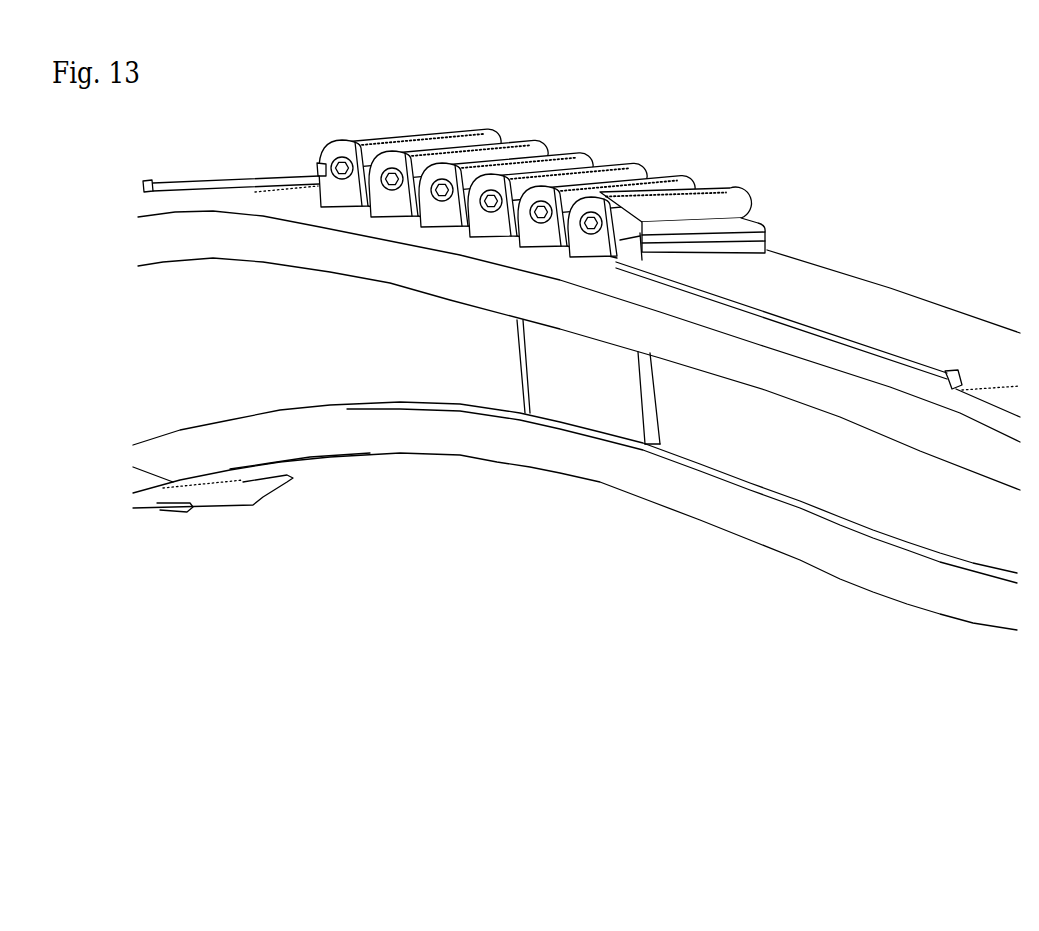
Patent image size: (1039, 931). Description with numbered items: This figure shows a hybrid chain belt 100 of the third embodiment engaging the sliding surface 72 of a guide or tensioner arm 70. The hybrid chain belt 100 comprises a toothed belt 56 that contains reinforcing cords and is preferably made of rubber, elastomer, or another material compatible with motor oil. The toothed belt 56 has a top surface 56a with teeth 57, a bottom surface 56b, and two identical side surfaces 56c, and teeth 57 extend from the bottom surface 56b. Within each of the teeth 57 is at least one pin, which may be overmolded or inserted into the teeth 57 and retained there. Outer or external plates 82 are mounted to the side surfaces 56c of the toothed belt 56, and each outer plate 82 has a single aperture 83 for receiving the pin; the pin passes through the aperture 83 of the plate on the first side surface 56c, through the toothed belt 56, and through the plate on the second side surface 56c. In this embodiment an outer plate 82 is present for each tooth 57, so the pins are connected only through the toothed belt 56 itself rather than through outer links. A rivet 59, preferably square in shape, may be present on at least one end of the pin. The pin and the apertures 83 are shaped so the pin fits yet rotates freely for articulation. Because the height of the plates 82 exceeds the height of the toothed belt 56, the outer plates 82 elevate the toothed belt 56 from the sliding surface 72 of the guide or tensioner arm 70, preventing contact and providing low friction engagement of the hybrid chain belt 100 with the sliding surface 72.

The hybrid chain belt 100 is at (247, 148).
The toothed belt 56 is at (643, 167).
The top surface 56a is at (380, 136).
The bottom surface 56b is at (630, 262).
The side surfaces 56c is at (637, 240).
The teeth 57 is at (427, 148).
The rivet 59 is at (331, 168).
The guide or tensioner arm 70 is at (847, 361).
The sliding surface 72 is at (843, 300).
The outer plates 82 is at (353, 188).
The aperture 83 is at (340, 160).